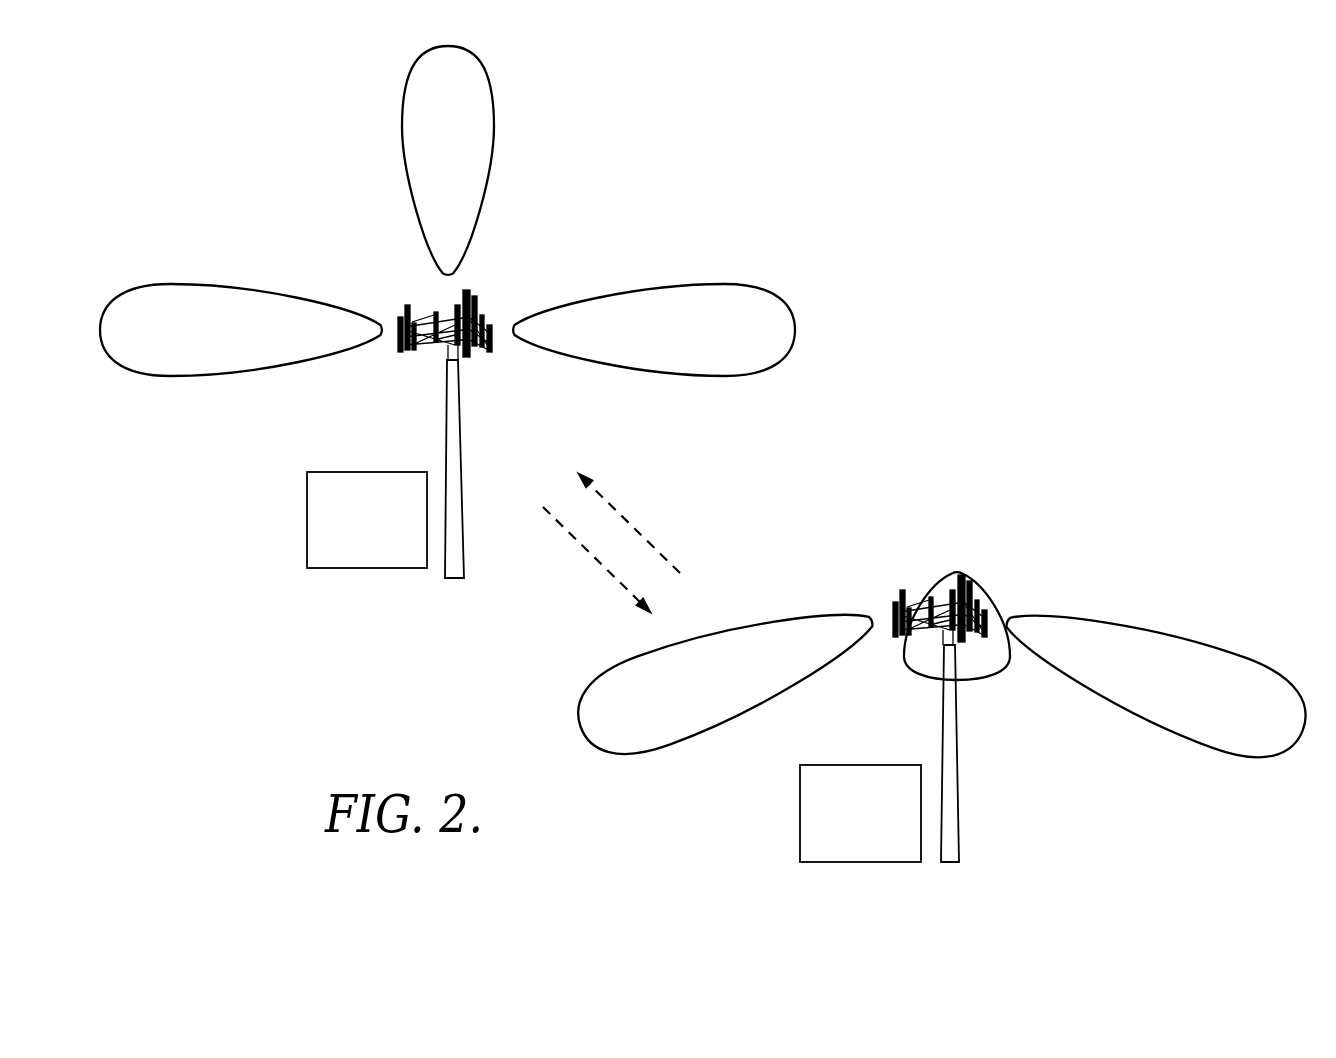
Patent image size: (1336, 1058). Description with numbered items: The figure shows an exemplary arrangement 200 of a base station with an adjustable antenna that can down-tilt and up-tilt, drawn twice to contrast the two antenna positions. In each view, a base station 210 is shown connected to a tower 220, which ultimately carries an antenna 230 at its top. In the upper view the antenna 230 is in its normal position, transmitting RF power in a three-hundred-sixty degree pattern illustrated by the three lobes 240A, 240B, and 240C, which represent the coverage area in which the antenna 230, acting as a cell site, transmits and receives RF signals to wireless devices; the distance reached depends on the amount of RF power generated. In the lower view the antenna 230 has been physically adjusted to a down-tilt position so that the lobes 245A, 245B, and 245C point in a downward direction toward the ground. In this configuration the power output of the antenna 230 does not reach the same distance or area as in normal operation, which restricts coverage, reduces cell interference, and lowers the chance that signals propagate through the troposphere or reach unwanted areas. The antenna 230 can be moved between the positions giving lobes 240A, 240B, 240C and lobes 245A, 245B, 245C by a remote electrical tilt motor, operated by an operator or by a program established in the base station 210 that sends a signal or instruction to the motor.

The wireless communication system 200 is at (1073, 125).
The base station 210 is at (362, 472).
The tower 220 is at (462, 447).
The antenna 230 is at (494, 362).
The lobe 240A is at (692, 284).
The lobe 240B is at (496, 134).
The lobe 240C is at (217, 284).
The lobe 245A is at (1211, 648).
The lobe 245B is at (985, 592).
The lobe 245C is at (622, 663).